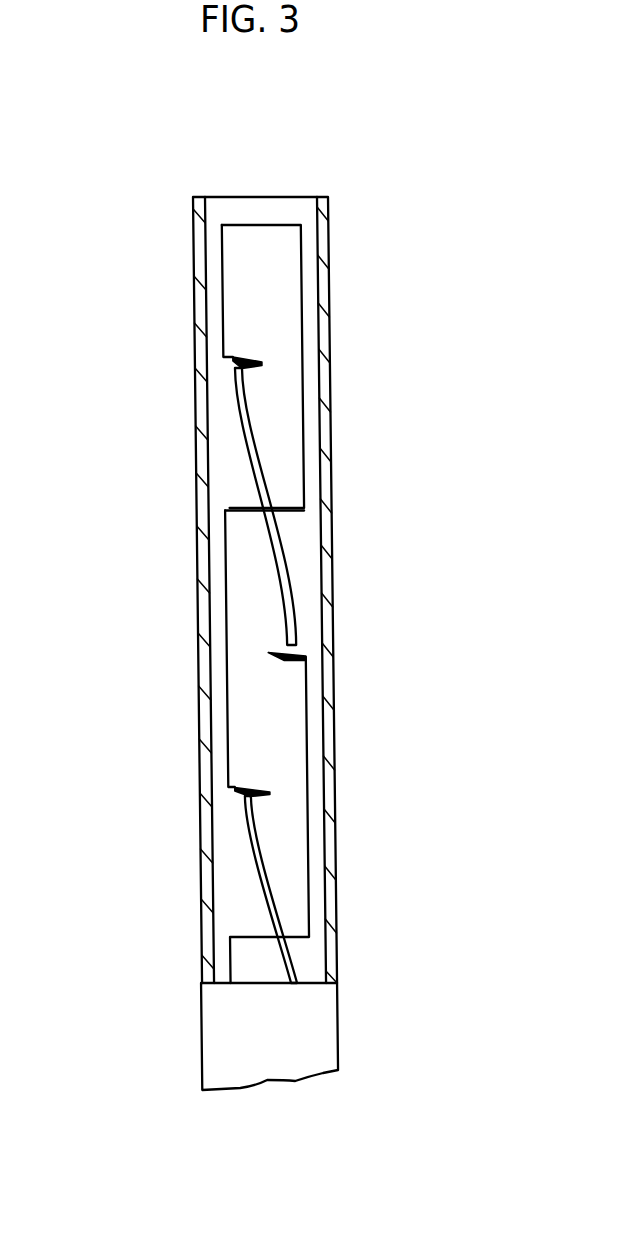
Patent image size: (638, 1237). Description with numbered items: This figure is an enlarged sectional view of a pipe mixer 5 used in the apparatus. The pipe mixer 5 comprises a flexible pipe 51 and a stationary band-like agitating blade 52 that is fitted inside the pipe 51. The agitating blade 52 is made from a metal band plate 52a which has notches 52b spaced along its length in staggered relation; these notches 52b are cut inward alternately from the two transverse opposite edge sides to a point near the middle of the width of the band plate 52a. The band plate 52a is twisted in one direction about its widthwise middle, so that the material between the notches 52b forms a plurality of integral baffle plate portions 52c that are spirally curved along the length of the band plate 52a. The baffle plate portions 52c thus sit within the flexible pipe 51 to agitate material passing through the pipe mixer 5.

The pipe mixer 5 is at (348, 739).
The flexible pipe 51 is at (332, 343).
The agitating blade 52 is at (292, 265).
The metal band plate 52a is at (238, 309).
The notches 52b is at (234, 366).
The baffle plate portions 52c is at (237, 551).